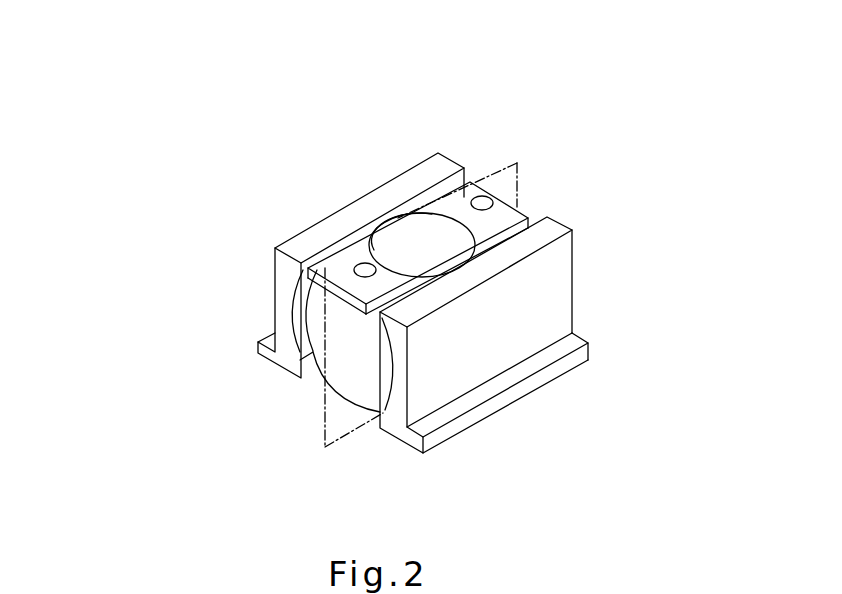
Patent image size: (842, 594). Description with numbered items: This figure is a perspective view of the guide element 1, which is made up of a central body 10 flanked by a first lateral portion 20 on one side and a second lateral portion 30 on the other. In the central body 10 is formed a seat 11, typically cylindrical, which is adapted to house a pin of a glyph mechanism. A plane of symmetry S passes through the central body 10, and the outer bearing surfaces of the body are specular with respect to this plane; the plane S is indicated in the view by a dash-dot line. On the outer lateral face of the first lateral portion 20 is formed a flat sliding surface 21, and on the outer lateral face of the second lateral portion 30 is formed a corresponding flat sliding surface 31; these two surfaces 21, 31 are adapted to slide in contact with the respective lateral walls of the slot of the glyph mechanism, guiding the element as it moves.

The guide element 1 is at (138, 134).
The central body 10 is at (528, 178).
The seat 11 is at (405, 247).
The first lateral portion 20 is at (400, 157).
The flat sliding surface 21 is at (273, 297).
The second lateral portion 30 is at (606, 235).
The flat sliding surface 31 is at (565, 312).
The plane of symmetry S is at (333, 425).